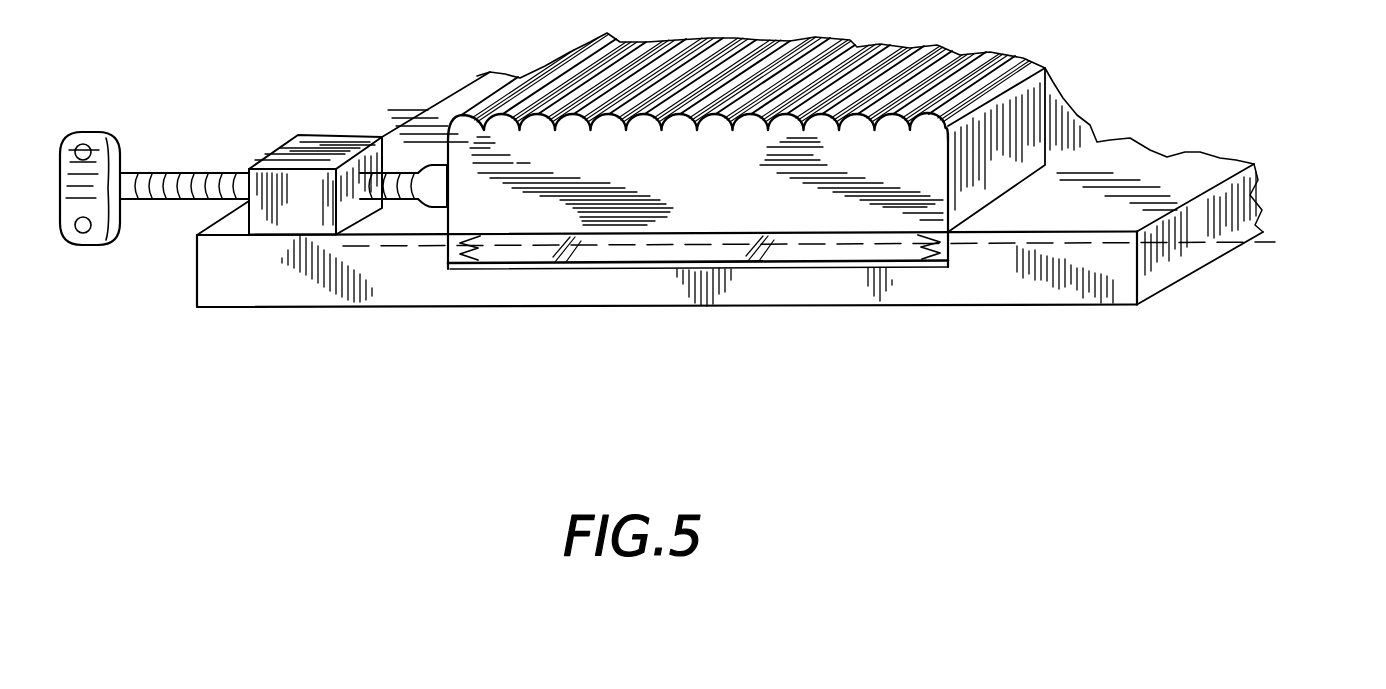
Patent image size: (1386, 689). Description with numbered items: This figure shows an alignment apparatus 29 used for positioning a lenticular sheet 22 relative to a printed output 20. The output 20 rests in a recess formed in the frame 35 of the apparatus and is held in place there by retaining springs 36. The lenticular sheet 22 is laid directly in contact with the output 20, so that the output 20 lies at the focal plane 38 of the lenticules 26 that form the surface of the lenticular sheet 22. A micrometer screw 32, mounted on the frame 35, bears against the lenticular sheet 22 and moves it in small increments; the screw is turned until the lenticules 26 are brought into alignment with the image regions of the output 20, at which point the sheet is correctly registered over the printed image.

The output 20 is at (870, 265).
The lenticular sheet 22 is at (948, 177).
The lenticules 26 is at (472, 116).
The alignment apparatus 29 is at (215, 364).
The micrometer screw 32 is at (177, 172).
The frame 35 is at (1140, 287).
The retaining springs 36 is at (475, 260).
The focal plane 38 is at (1273, 241).